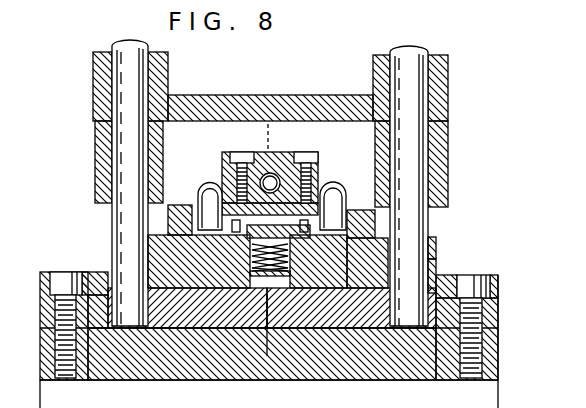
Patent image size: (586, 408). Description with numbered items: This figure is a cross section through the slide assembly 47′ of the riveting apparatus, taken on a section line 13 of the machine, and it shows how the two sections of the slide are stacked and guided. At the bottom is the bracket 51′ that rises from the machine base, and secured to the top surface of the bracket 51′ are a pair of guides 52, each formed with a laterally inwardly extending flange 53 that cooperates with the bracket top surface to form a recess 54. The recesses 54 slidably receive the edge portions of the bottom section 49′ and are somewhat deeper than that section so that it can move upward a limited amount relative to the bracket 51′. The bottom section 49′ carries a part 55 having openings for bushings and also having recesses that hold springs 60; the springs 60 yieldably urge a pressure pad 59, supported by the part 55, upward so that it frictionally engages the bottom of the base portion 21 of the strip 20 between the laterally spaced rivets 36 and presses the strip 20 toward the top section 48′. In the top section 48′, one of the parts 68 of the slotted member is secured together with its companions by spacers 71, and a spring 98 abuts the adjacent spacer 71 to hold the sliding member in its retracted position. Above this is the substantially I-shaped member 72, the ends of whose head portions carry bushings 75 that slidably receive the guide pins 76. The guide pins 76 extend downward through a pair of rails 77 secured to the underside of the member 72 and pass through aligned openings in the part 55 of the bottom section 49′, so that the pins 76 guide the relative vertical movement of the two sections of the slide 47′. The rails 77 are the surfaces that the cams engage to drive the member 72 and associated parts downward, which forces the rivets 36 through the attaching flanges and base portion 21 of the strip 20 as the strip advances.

The base plate / section line 13 is at (265, 133).
The strip 20 is at (332, 188).
The base portion 21 is at (348, 214).
The rivets 36 is at (272, 206).
The slide assembly 47′ is at (437, 243).
The top section 48′ is at (323, 162).
The bottom section 49′ is at (438, 264).
The brackets 51′ is at (498, 406).
The guides 52 is at (50, 306).
The flanges 53 is at (97, 284).
The recesses 54 is at (95, 274).
The part 55 is at (230, 274).
The pressure pad 59 is at (290, 242).
The springs 60 is at (278, 277).
The part 68 is at (224, 175).
The spacers 71 is at (203, 186).
The member 72 is at (243, 104).
The bushings 75 is at (107, 66).
The guide pins 76 is at (122, 167).
The rails 77 is at (97, 138).
The spring 98 is at (269, 177).